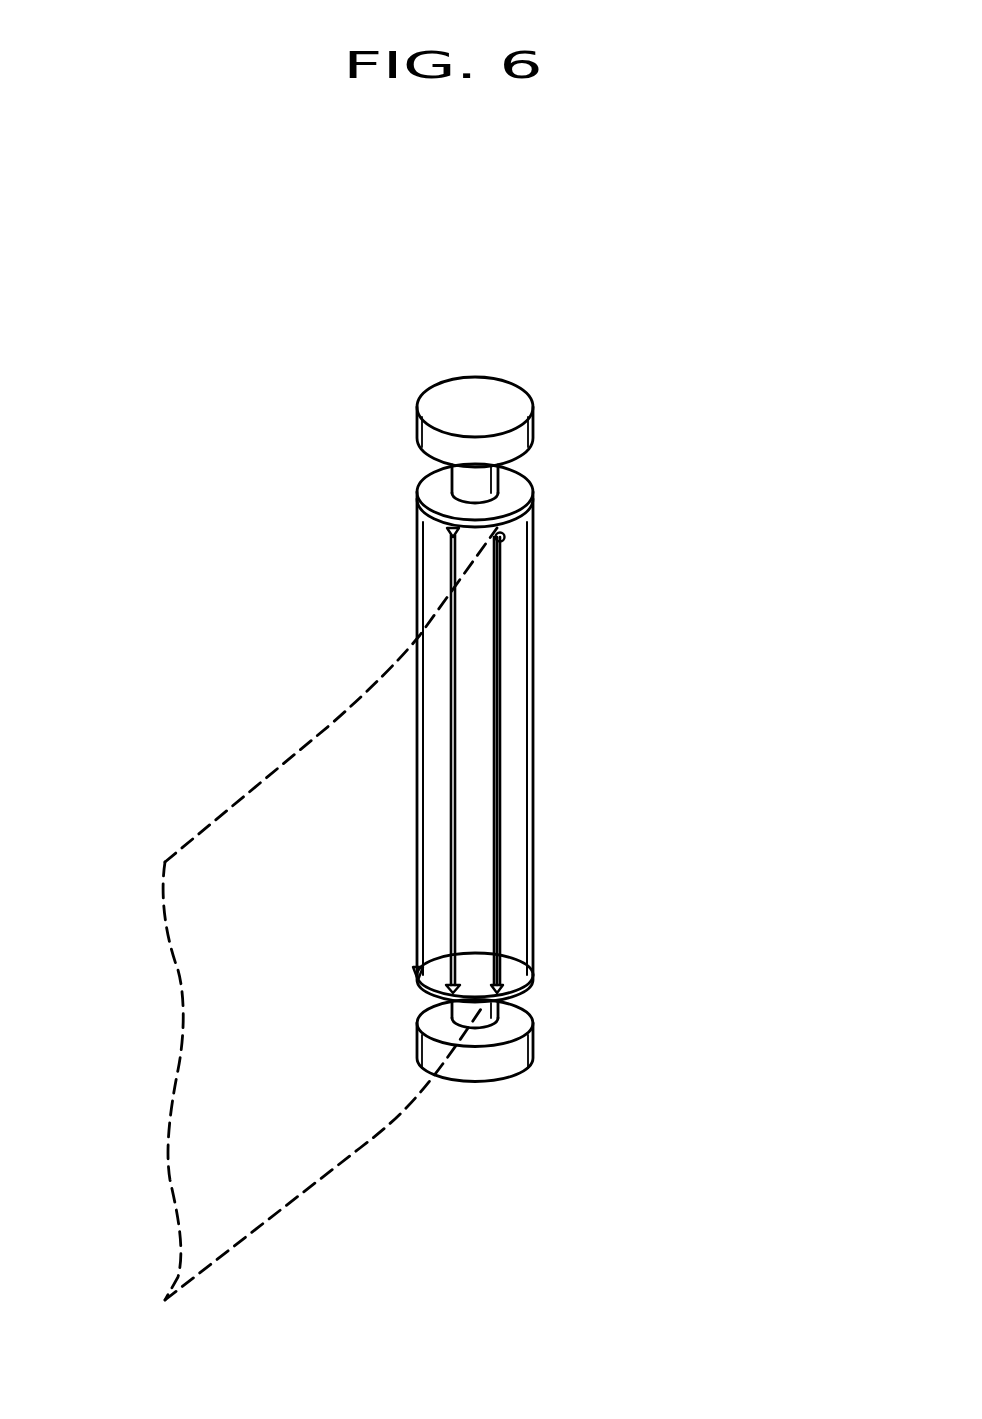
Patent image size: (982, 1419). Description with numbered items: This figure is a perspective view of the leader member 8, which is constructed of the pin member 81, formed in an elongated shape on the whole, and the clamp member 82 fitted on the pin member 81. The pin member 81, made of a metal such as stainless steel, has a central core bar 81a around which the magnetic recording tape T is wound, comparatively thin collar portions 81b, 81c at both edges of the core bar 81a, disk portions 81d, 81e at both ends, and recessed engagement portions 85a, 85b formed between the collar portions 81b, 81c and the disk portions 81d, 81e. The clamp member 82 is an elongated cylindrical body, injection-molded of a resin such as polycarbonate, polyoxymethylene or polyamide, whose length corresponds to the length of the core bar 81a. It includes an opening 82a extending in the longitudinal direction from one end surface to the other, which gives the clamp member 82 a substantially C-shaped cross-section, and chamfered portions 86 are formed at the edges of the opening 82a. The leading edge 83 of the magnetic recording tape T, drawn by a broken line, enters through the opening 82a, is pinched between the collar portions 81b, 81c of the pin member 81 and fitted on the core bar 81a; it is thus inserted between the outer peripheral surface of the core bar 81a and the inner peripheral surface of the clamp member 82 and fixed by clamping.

The leader member 8 is at (402, 747).
The pin member 81 is at (456, 747).
The core bar 81a is at (470, 622).
The collar portion 81b is at (437, 495).
The collar portion 81c is at (523, 988).
The disk portion 81d is at (473, 393).
The disk portion 81e is at (487, 1063).
The clamp member 82 is at (574, 757).
The opening 82a is at (553, 530).
The leading edge 83 is at (407, 1112).
The recessed engagement portion 85a is at (463, 481).
The recessed engagement portion 85b is at (500, 1010).
The chamfered portions 86 is at (500, 535).
The magnetic recording tape T is at (240, 1207).